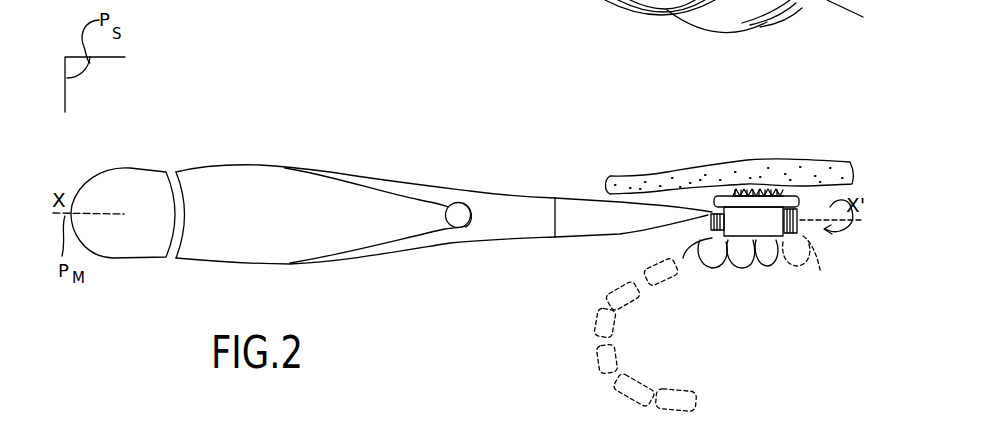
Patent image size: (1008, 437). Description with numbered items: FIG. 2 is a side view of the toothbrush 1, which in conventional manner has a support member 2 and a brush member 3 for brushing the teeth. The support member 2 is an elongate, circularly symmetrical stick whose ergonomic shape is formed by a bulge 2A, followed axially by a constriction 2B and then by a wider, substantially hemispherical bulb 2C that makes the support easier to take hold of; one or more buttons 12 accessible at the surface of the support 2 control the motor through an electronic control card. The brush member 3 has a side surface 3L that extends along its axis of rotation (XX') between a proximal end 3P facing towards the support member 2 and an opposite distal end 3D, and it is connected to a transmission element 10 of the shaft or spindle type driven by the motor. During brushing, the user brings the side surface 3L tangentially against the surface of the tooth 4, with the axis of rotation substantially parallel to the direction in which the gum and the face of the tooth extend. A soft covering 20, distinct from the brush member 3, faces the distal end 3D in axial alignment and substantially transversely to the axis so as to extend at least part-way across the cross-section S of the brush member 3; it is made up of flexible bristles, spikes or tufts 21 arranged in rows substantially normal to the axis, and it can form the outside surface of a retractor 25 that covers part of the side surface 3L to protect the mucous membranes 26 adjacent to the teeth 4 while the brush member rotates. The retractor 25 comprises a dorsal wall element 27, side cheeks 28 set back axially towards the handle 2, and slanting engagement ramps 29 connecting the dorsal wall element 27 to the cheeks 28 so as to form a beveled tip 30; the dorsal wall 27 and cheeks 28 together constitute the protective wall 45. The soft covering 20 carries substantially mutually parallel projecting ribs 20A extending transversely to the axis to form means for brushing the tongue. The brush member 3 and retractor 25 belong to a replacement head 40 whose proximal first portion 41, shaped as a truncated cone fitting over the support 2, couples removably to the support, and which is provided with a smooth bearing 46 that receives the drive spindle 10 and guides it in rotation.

The toothbrush 1 is at (302, 105).
The support member 2 is at (313, 209).
The bulge 2A is at (272, 165).
The constriction 2B is at (170, 165).
The wider bulb 2C is at (95, 165).
The brush member 3 is at (740, 240).
The proximal end 3P is at (716, 238).
The side surface 3L is at (741, 245).
The distal end 3D is at (793, 238).
The tooth 4 is at (767, 268).
The transmission element 10 is at (627, 206).
The buttons 12 is at (457, 213).
The soft covering 20 is at (758, 197).
The projecting ribs 20A is at (730, 196).
The tufts of flexible bristles or spikes 21 is at (808, 236).
The retractor 25 is at (771, 196).
The mucous membranes 26 is at (648, 180).
The dorsal wall element 27 is at (742, 194).
The side cheeks 28 is at (763, 238).
The engagement ramps 29 is at (787, 209).
The beveled tip 30 is at (799, 210).
The replacement head 40 is at (591, 192).
The proximal first portion 41 is at (592, 240).
The protective wall 45 is at (762, 194).
The bearing 46 is at (712, 214).
The cross-section S is at (721, 262).